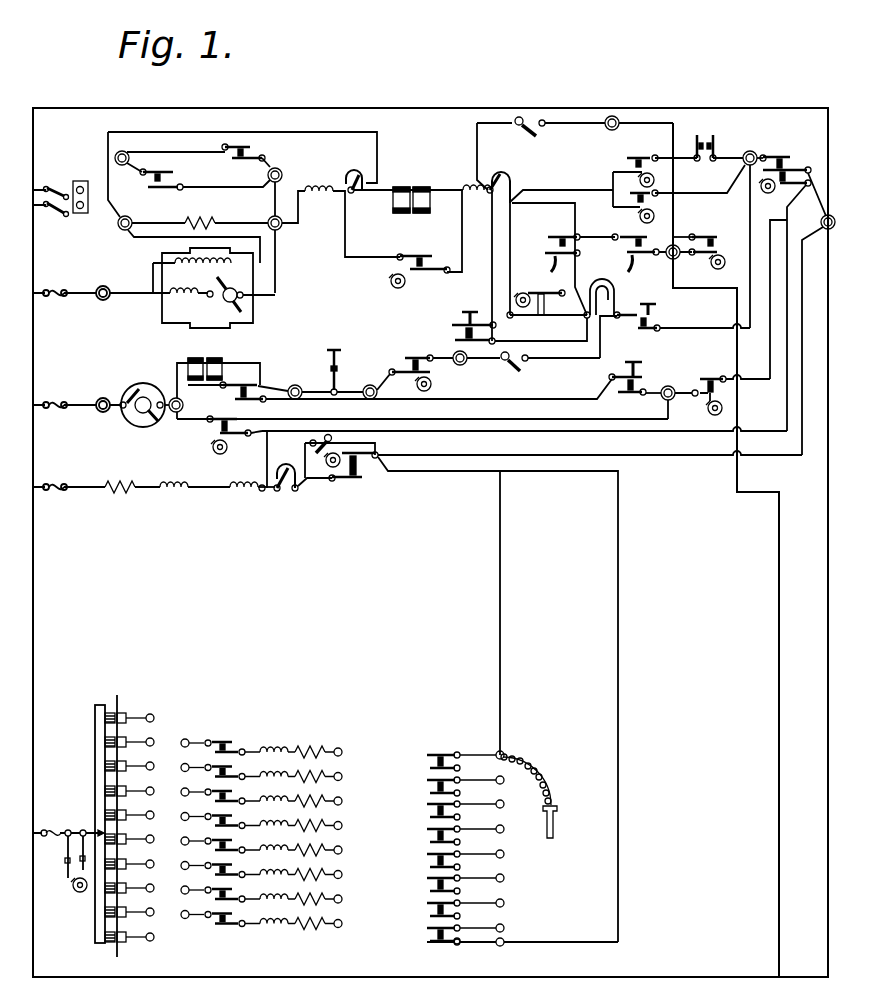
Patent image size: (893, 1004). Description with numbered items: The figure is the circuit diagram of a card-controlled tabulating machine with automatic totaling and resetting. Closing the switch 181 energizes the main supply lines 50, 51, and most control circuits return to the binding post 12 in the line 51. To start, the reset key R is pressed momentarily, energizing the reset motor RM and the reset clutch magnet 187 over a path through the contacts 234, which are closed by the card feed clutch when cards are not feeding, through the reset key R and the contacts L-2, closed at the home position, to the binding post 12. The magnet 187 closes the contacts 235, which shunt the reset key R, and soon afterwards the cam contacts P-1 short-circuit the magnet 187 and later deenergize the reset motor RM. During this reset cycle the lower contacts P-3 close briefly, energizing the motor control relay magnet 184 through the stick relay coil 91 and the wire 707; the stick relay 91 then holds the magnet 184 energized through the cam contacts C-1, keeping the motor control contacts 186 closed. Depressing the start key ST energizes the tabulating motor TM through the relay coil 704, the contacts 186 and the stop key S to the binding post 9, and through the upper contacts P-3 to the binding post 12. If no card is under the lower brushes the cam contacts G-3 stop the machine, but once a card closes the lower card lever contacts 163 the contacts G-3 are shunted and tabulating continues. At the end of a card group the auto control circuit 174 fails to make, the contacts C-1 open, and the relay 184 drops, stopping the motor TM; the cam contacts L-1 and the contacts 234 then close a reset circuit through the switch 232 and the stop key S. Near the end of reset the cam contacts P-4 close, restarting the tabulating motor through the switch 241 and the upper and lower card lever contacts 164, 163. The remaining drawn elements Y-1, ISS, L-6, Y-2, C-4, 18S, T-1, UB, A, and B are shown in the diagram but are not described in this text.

The switch 181 is at (54, 186).
The relay Y-1 is at (253, 151).
The relay coil 704 is at (322, 206).
The relay ISS is at (401, 195).
The switch 241 is at (542, 136).
The lamp L-6 is at (628, 160).
The relay Y-2 is at (705, 133).
The binding post 9 is at (748, 152).
The cam contacts P-3 is at (796, 166).
The main supply line 51 is at (414, 112).
The binding post 12 is at (824, 233).
The relay C-4 is at (426, 268).
The relay 18S is at (486, 232).
The lower card lever contact 163 is at (548, 251).
The lamp T-1 is at (631, 203).
The cam contacts P-4 is at (718, 249).
The upper card lever contacts 164 is at (627, 258).
The tabulating motor TM is at (245, 307).
The start key ST is at (456, 341).
The cam contacts G-3 is at (546, 306).
The stop key S is at (651, 331).
The motor control contacts 186 is at (604, 319).
The main supply line 50 is at (36, 344).
The reset clutch magnet 187 is at (200, 358).
The contacts 235 is at (253, 386).
The contacts 234 is at (337, 361).
The cam contacts L-1 is at (432, 383).
The switch 232 is at (526, 364).
The reset key R is at (643, 382).
The contacts L-2 is at (727, 391).
The reset motor RM is at (130, 415).
The cam contacts P-1 is at (216, 424).
The wire 707 is at (477, 431).
The motor control relay magnet 184 is at (180, 496).
The stick relay coil 91 is at (258, 496).
The cam contacts C-1 is at (368, 471).
The auto control circuit 174 is at (618, 513).
The terminal block UB is at (107, 756).
The contact bank A is at (778, 866).
The contact bank B is at (522, 826).